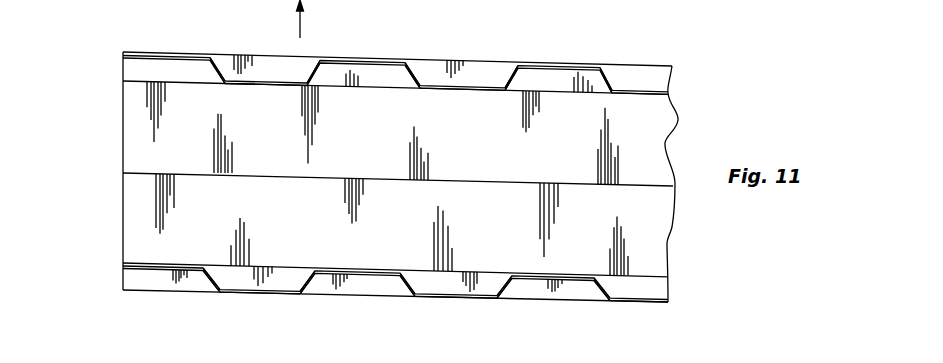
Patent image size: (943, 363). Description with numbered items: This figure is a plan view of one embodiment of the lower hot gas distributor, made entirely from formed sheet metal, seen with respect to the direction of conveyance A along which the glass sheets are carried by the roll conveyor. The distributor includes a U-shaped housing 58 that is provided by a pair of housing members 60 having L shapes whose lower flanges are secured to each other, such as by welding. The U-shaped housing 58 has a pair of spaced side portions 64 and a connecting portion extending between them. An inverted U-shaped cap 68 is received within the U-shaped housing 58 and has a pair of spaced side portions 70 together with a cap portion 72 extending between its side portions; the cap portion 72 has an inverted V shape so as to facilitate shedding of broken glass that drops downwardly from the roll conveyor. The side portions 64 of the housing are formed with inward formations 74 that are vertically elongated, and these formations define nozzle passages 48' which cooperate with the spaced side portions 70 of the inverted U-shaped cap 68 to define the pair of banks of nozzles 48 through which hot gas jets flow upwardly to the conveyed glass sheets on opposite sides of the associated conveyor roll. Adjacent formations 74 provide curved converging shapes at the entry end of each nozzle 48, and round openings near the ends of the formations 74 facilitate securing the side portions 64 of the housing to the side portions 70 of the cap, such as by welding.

The U-shaped housing 58 is at (111, 46).
The side portions of the U-shaped housing 64 is at (137, 51).
The side portions of the inverted U-shaped cap 70 is at (167, 80).
The inverted U-shaped cap 68 is at (166, 167).
The cap portion 72 is at (177, 206).
The nozzle banks 48 is at (407, 180).
The inward formations 74 is at (223, 70).
The nozzle passages 48' is at (658, 171).
The housing members 60 is at (668, 92).
The direction of conveyance A is at (300, 33).